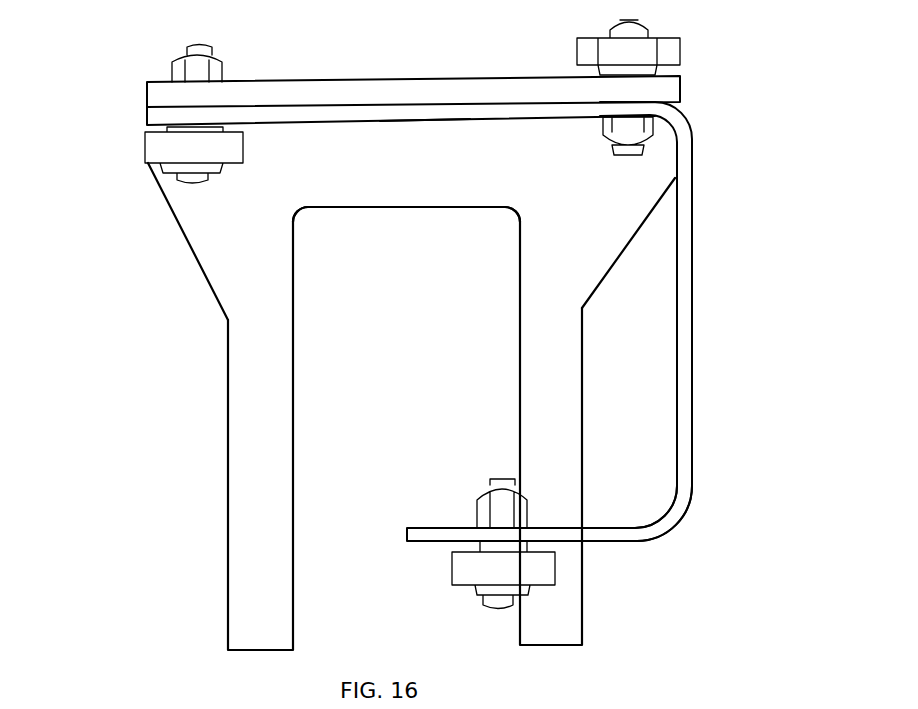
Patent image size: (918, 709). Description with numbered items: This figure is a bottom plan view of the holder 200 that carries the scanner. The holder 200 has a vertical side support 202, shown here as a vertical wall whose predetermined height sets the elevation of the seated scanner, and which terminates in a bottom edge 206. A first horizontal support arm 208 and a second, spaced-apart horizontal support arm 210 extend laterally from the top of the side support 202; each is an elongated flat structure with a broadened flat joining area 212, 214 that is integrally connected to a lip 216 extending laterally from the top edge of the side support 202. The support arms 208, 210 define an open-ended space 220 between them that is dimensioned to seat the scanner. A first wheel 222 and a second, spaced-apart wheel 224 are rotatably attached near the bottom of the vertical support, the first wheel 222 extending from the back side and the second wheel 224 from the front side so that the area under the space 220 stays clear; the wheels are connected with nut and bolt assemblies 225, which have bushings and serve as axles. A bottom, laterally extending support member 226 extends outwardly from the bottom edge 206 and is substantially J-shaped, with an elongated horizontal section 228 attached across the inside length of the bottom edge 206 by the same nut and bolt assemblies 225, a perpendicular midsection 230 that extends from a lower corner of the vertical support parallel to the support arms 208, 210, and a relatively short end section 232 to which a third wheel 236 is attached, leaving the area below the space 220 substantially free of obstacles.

The holder 200 is at (140, 74).
The vertical side support 202 is at (304, 80).
The bottom edge 206 is at (406, 88).
The first horizontal support arm 208 is at (554, 413).
The second horizontal support arm 210 is at (250, 466).
The broadened flat joining area 212 is at (646, 183).
The broadened flat joining area 214 is at (220, 244).
The lip 216 is at (408, 186).
The open-ended space 220 is at (437, 377).
The first wheel 222 is at (660, 53).
The second wheel 224 is at (148, 165).
The nut and bolt assemblies 225 is at (217, 68).
The bottom laterally extending support member 226 is at (691, 352).
The elongated horizontal section 228 is at (430, 113).
The perpendicular midsection 230 is at (685, 250).
The end section 232 is at (620, 534).
The third wheel 236 is at (483, 568).